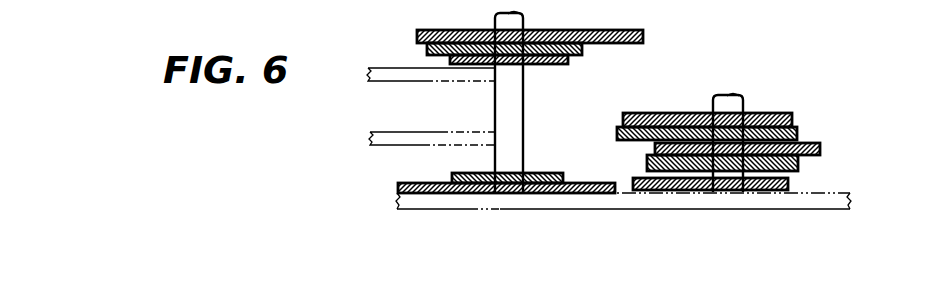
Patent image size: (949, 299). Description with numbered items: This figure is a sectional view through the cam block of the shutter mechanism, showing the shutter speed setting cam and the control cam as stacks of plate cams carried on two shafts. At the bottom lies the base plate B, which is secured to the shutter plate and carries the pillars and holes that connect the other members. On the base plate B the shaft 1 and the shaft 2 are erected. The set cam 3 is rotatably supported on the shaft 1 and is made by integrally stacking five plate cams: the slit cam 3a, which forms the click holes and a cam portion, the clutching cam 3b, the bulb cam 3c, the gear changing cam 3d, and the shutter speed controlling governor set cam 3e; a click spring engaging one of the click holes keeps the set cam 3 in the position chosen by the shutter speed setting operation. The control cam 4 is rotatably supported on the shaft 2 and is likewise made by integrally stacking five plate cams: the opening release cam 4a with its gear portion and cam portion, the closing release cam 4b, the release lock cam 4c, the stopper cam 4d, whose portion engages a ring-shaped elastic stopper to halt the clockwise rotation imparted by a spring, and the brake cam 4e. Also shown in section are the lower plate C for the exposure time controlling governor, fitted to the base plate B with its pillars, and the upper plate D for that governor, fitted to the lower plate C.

The shaft 1 is at (512, 170).
The shaft 2 is at (732, 170).
The set cam 3 is at (474, 111).
The slit cam 3a is at (473, 179).
The clutching cam 3b is at (452, 175).
The bulb cam 3c is at (450, 62).
The gear changing cam 3d is at (427, 50).
The shutter speed controlling governor set cam 3e is at (417, 37).
The control cam 4 is at (768, 138).
The opening release cam 4a is at (761, 183).
The closing release cam 4b is at (798, 165).
The release lock cam 4c is at (820, 146).
The stopper cam 4d is at (797, 130).
The brake cam 4e is at (792, 116).
The base plate B is at (439, 203).
The lower plate for exposure time controlling governor C is at (458, 138).
The upper plate for exposure time controlling governor D is at (472, 75).